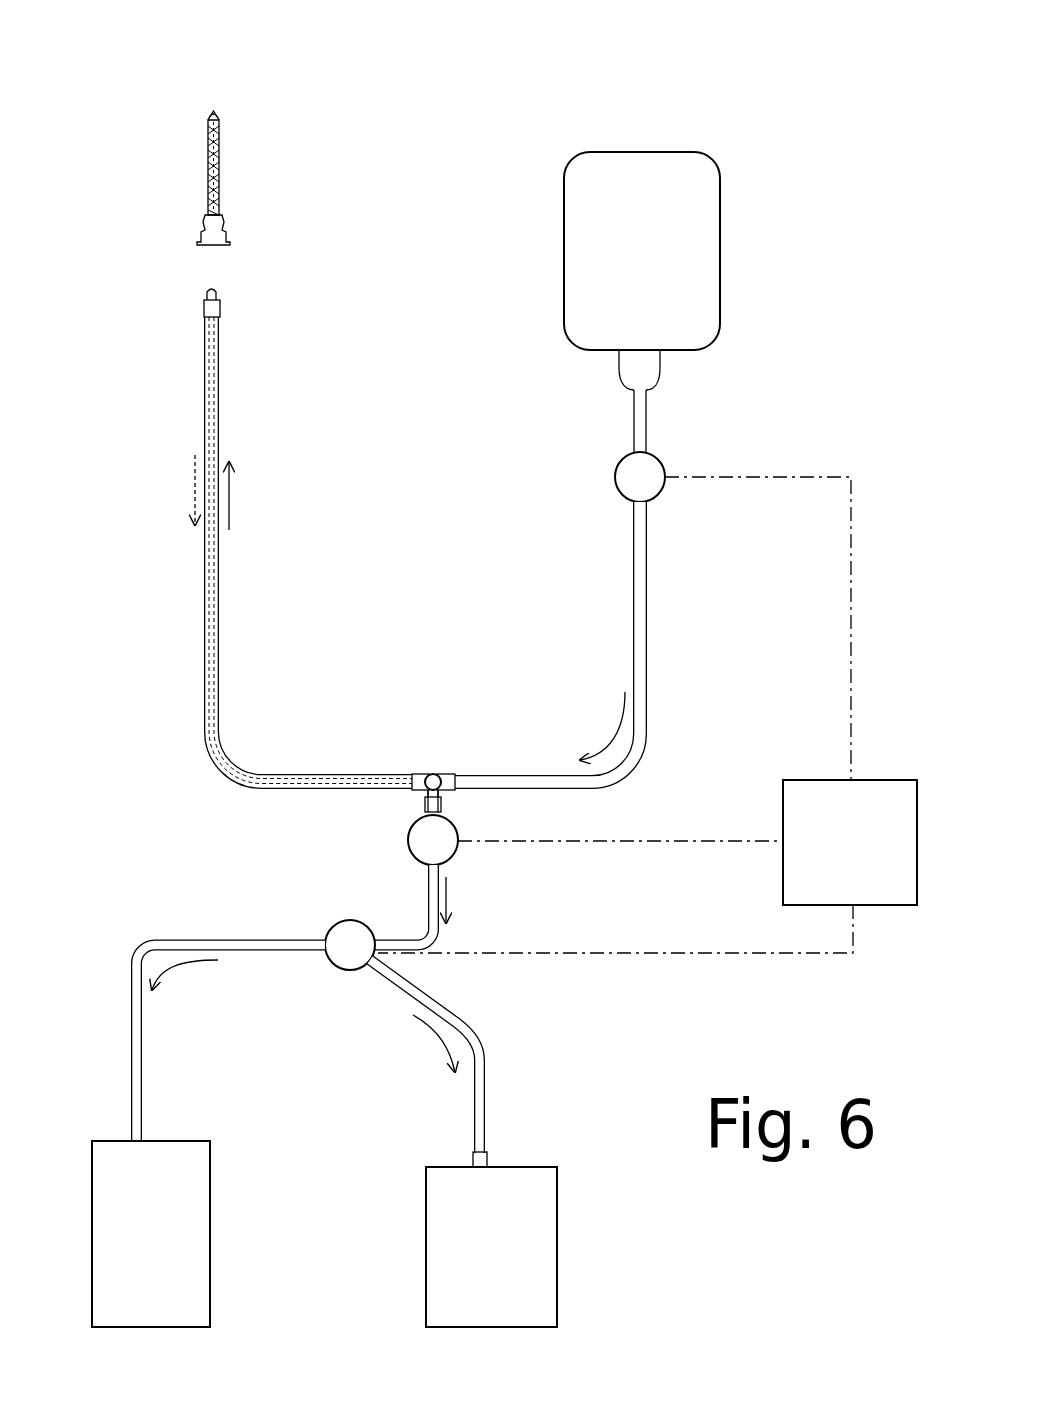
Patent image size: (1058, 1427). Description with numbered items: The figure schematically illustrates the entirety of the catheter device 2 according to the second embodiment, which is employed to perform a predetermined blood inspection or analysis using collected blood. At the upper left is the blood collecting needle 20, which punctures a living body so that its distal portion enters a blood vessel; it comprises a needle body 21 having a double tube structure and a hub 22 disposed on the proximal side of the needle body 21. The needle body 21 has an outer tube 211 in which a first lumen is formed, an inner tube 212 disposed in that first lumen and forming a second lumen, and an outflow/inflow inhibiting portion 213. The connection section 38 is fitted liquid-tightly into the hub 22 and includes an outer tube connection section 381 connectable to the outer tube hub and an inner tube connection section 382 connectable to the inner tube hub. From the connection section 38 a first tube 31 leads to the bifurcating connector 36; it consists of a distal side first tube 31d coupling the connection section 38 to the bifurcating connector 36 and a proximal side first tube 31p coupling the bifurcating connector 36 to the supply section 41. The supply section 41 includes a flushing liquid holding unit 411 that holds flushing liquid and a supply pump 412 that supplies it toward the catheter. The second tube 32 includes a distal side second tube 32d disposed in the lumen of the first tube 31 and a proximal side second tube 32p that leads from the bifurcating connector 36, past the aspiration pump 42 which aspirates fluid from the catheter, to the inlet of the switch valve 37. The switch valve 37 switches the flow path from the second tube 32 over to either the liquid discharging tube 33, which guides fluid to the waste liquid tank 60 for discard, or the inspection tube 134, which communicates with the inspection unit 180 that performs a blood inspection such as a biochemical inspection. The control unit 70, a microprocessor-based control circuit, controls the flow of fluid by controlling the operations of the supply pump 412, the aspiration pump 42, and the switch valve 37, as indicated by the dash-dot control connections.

The catheter device 2 is at (92, 10).
The blood collecting needle 20 is at (224, 163).
The needle body 21 is at (250, 148).
The outer tube 211 is at (219, 170).
The inner tube 212 is at (219, 190).
The outflow/inflow inhibiting portion 213 is at (218, 121).
The hub 22 is at (203, 236).
The first tube section 31 is at (451, 642).
The distal side first tube 31d is at (337, 729).
The proximal side first tube 31p is at (487, 773).
The second tube section 32 is at (402, 867).
The distal side second tube 32d is at (395, 822).
The proximal side second tube 32p is at (428, 895).
The liquid discharging tube 33 is at (162, 940).
The bifurcating connector 36 is at (440, 787).
The switch valve 37 is at (355, 968).
The connection section 38 is at (226, 532).
The outer tube connection section 381 is at (205, 310).
The inner tube connection section 382 is at (206, 292).
The supply section 41 is at (721, 327).
The flushing liquid holding unit 411 is at (700, 318).
The supply pump 412 is at (655, 460).
The aspiration pump 42 is at (458, 848).
The waste liquid tank 60 is at (110, 1258).
The control unit 70 is at (884, 780).
The inspection tube 134 is at (465, 1012).
The inspection unit 180 is at (540, 1258).